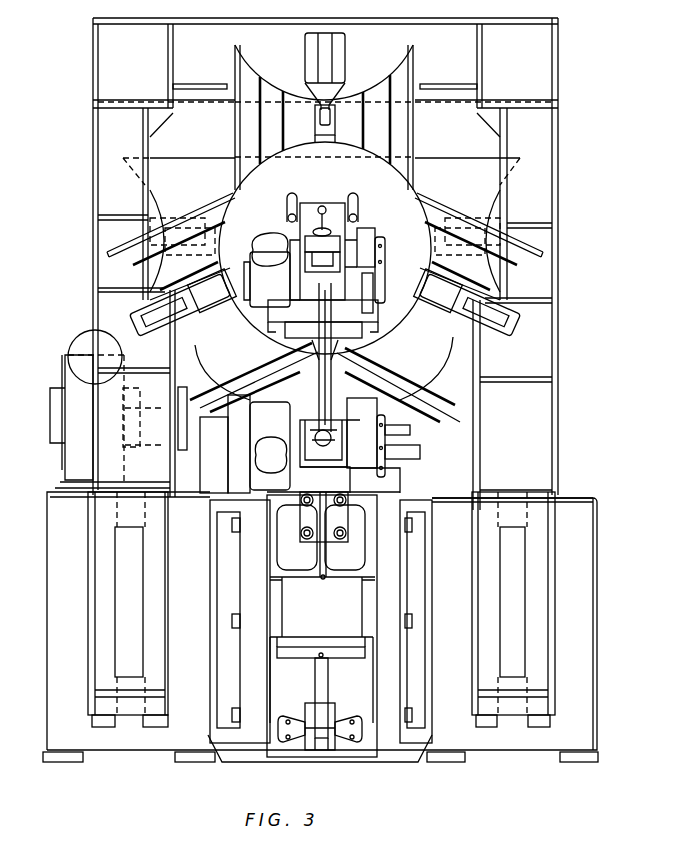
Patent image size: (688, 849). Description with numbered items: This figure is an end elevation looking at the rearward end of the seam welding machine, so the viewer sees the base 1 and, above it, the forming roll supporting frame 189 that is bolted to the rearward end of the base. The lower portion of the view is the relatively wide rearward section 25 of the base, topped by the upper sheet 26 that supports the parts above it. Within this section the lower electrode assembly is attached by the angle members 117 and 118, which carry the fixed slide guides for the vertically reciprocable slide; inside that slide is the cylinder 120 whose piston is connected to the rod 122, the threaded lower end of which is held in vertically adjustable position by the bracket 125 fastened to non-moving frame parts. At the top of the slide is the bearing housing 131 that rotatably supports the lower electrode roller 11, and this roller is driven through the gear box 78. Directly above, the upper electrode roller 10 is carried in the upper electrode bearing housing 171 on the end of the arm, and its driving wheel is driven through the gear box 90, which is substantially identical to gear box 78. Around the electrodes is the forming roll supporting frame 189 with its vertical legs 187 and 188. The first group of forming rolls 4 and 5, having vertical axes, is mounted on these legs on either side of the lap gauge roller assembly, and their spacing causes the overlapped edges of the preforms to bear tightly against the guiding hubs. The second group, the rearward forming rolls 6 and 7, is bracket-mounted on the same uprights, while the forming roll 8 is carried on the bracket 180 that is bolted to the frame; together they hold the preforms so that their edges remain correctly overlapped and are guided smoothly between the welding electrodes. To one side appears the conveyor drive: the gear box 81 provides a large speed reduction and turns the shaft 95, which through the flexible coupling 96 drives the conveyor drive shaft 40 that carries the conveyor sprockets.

The base 1 is at (608, 661).
The forming roll 4 is at (438, 172).
The forming roll 5 is at (208, 173).
The forming roll 6 is at (442, 398).
The forming roll 7 is at (217, 366).
The forming roll 8 is at (247, 114).
The upper electrode roller 10 is at (322, 310).
The lower electrode roller 11 is at (332, 372).
The rearward section 25 is at (582, 583).
The upper sheet 26 is at (575, 500).
The conveyor drive shaft 40 is at (213, 427).
The gear box 78 is at (260, 415).
The gear box 81 is at (70, 348).
The gear box 90 is at (258, 258).
The shaft 95 is at (150, 420).
The flexible coupling 96 is at (183, 450).
The angle member 117 is at (418, 594).
The angle member 118 is at (225, 580).
The cylinder 120 is at (352, 607).
The rod 122 is at (322, 680).
The bracket 125 is at (288, 713).
The bearing housing 131 is at (362, 400).
The upper electrode bearing housing 171 is at (378, 290).
The bracket 180 is at (336, 69).
The vertical leg 187 is at (522, 240).
The vertical leg 188 is at (117, 232).
The forming roll supporting frame 189 is at (570, 130).